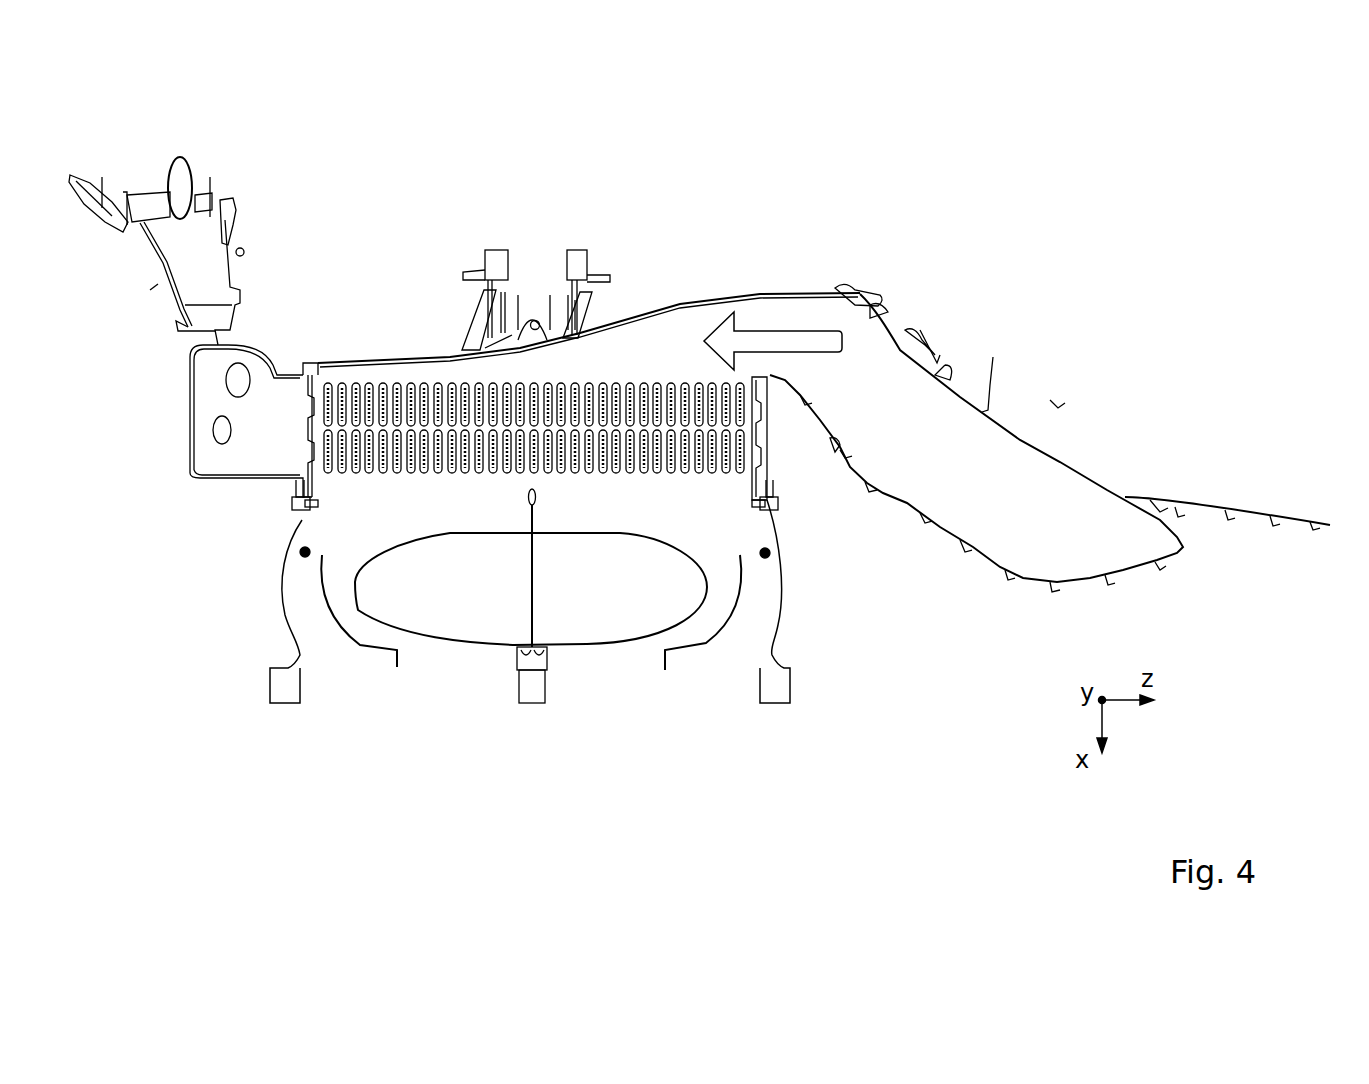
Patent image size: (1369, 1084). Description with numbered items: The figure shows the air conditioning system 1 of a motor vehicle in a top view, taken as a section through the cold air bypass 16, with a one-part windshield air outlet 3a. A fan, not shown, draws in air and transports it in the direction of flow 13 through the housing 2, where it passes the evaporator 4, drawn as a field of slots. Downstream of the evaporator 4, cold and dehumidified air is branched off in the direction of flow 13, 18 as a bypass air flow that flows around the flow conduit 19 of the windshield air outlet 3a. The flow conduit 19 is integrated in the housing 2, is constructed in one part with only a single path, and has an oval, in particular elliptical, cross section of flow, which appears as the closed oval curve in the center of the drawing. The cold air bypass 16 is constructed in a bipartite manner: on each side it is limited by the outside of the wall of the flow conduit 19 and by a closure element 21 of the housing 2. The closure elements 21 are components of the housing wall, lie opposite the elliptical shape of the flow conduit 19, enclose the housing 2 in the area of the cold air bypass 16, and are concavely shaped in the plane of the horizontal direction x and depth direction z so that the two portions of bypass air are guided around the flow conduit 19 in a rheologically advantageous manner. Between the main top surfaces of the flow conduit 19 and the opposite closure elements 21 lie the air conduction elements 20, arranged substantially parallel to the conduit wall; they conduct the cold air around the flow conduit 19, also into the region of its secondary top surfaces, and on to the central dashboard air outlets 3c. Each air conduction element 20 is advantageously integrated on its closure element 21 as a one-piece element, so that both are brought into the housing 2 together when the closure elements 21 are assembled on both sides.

The air conditioning system 1 is at (538, 313).
The housing 2 is at (673, 307).
The windshield air outlet 3a is at (531, 589).
The central dashboard air outlets 3c is at (531, 693).
The evaporator 4 is at (426, 400).
The direction of flow 13 is at (757, 340).
The cold air bypass 16 is at (305, 552).
The direction of flow 18 is at (355, 522).
The flow conduit 19 is at (570, 643).
The air conduction elements 20 is at (348, 637).
The closure elements 21 is at (278, 588).